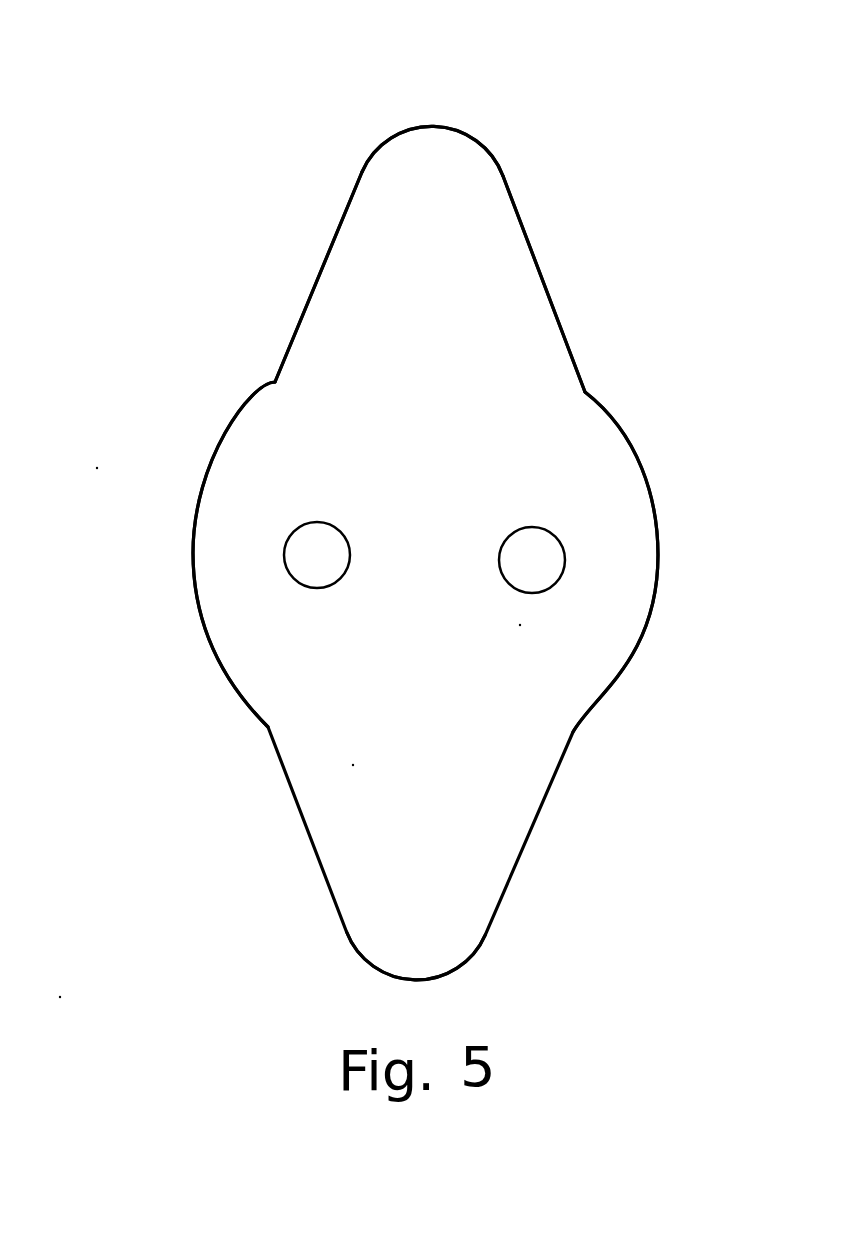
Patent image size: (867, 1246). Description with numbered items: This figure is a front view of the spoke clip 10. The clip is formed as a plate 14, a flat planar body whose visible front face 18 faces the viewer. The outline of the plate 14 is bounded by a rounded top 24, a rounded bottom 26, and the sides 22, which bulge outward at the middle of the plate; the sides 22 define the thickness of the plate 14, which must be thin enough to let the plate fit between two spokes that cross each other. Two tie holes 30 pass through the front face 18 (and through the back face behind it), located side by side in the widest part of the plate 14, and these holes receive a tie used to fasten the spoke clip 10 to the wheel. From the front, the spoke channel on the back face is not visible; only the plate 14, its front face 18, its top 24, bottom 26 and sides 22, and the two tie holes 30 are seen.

The spoke clip 10 is at (698, 115).
The plate 14 is at (530, 233).
The front face 18 is at (372, 363).
The sides 22 is at (193, 595).
The top 24 is at (428, 127).
The bottom 26 is at (427, 980).
The tie holes 30 is at (305, 555).